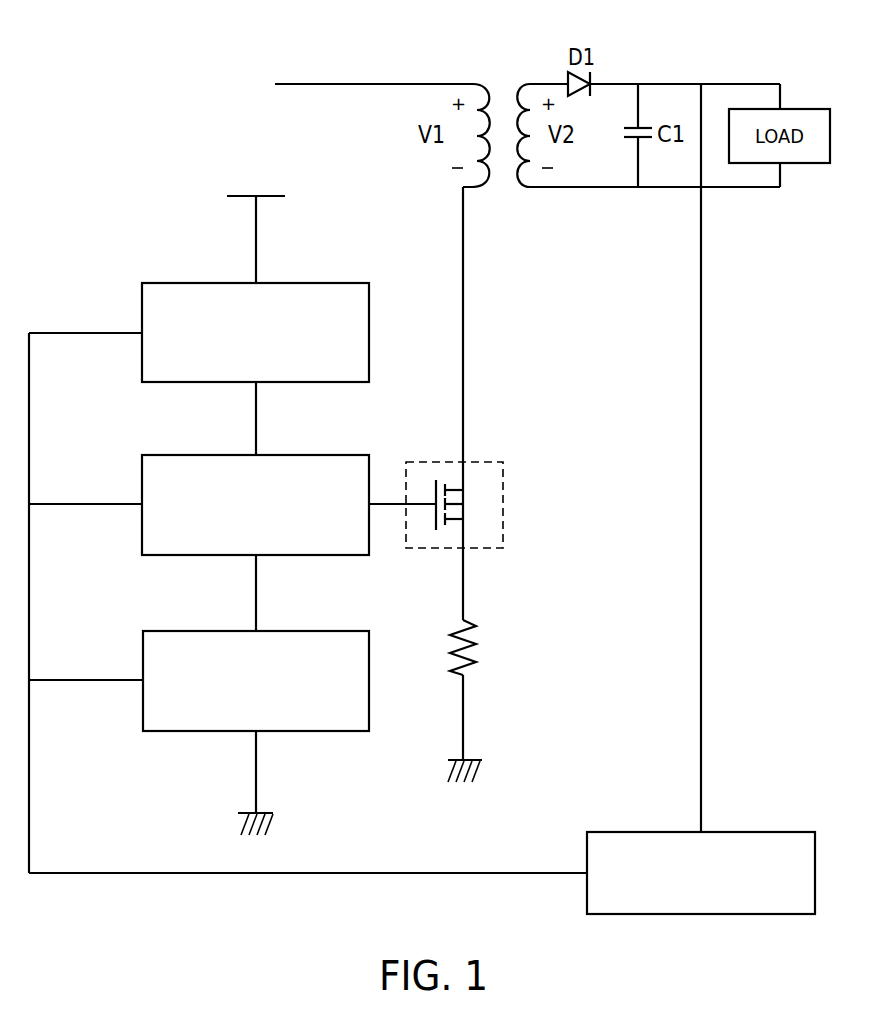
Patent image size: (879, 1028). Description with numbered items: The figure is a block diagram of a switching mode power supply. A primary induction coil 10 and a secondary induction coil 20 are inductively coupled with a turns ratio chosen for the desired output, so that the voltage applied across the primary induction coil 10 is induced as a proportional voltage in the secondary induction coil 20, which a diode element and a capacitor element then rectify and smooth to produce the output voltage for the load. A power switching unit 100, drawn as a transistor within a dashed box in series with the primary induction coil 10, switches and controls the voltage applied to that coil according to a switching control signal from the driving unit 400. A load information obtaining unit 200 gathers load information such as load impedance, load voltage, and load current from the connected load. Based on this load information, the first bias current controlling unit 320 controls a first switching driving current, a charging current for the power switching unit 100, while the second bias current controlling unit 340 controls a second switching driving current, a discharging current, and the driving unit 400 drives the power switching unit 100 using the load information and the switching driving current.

The primary induction coil 10 is at (468, 82).
The secondary induction coil 20 is at (548, 82).
The power switching unit 100 is at (492, 462).
The load information obtaining unit 200 is at (735, 832).
The first bias current controlling unit 320 is at (343, 283).
The second bias current controlling unit 340 is at (350, 631).
The driving unit 400 is at (346, 455).